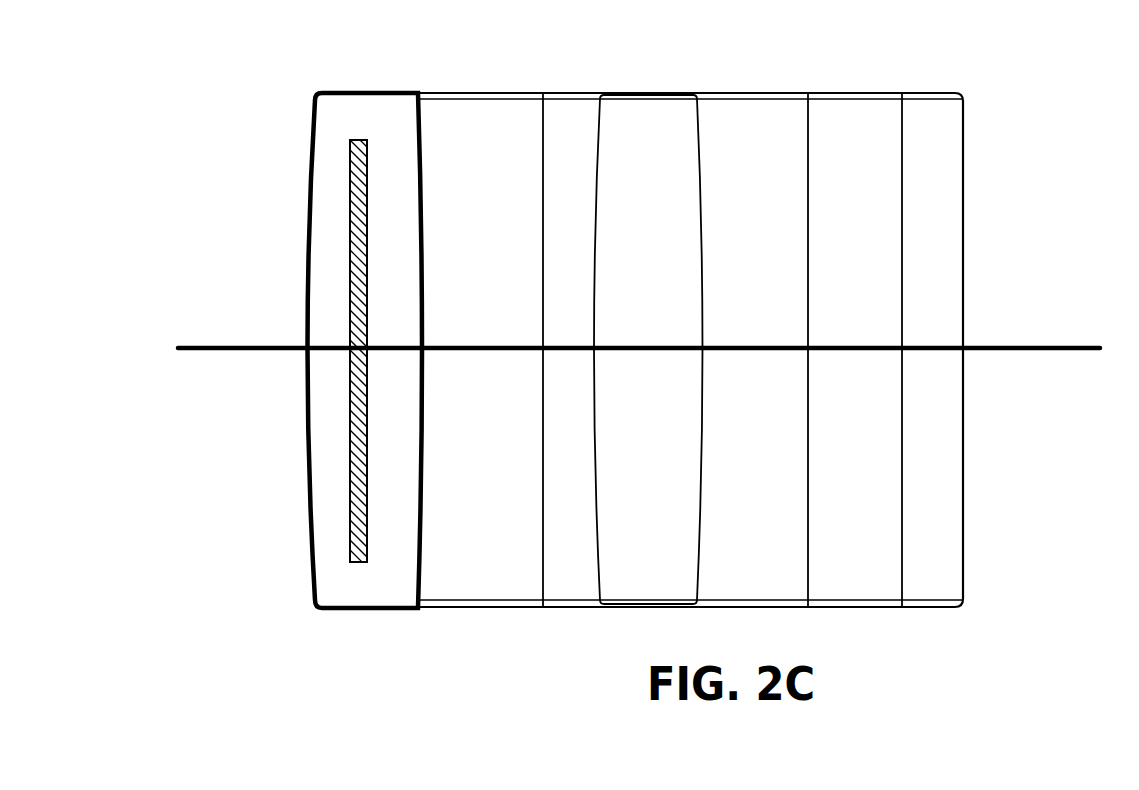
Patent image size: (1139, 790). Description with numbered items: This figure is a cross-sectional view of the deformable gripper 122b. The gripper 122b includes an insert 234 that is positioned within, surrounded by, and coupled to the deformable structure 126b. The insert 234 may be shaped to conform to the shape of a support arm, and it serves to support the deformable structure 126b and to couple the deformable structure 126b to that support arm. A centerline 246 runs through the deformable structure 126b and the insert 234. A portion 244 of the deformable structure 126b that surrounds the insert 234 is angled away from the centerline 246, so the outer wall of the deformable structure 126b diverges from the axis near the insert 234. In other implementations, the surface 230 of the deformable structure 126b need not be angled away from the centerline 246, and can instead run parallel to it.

The gripper 122b is at (146, 412).
The deformable structure 126b is at (1020, 166).
The surface 230 is at (872, 473).
The insert 234 is at (351, 442).
The portion 244 is at (425, 146).
The centerline 246 is at (1040, 347).